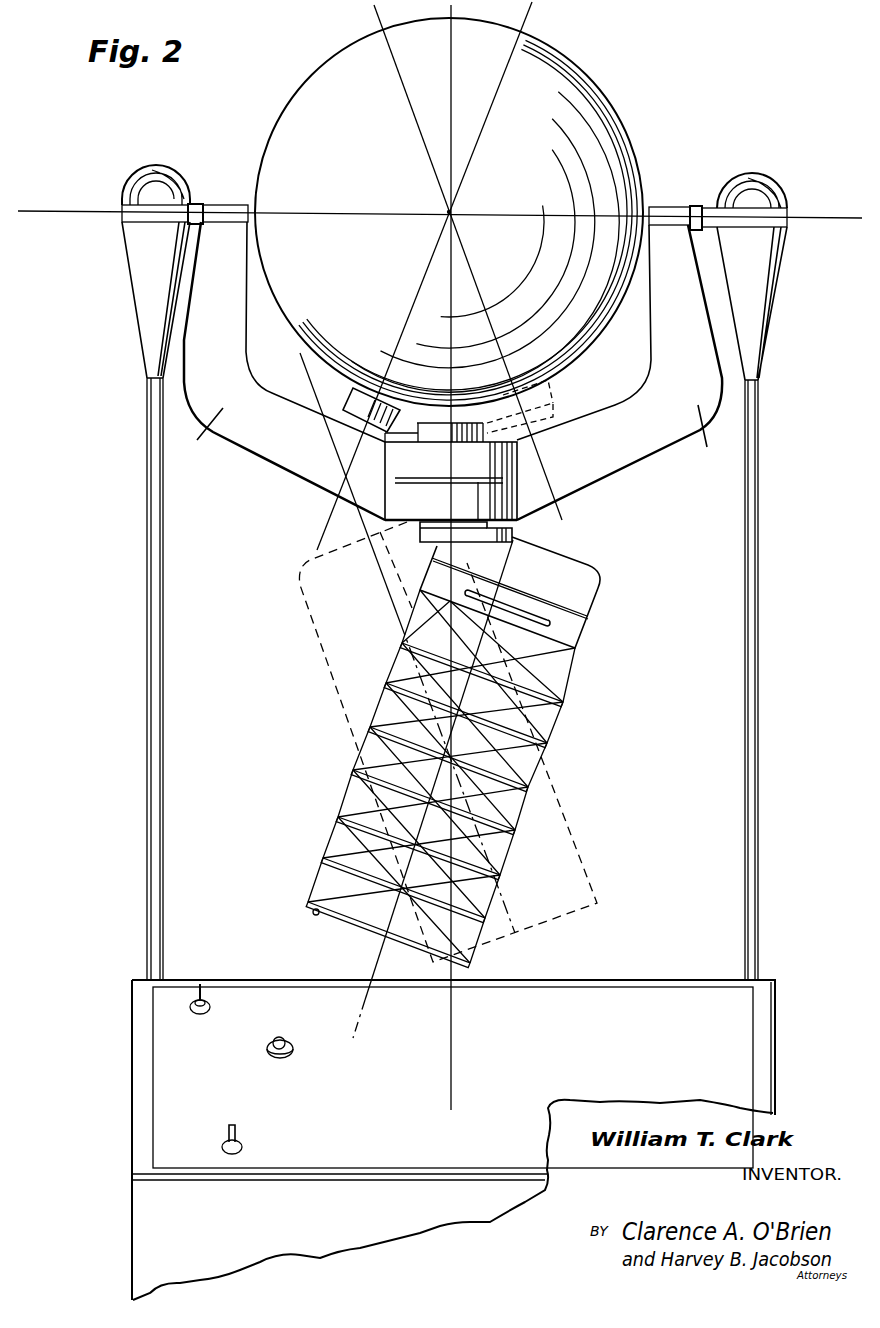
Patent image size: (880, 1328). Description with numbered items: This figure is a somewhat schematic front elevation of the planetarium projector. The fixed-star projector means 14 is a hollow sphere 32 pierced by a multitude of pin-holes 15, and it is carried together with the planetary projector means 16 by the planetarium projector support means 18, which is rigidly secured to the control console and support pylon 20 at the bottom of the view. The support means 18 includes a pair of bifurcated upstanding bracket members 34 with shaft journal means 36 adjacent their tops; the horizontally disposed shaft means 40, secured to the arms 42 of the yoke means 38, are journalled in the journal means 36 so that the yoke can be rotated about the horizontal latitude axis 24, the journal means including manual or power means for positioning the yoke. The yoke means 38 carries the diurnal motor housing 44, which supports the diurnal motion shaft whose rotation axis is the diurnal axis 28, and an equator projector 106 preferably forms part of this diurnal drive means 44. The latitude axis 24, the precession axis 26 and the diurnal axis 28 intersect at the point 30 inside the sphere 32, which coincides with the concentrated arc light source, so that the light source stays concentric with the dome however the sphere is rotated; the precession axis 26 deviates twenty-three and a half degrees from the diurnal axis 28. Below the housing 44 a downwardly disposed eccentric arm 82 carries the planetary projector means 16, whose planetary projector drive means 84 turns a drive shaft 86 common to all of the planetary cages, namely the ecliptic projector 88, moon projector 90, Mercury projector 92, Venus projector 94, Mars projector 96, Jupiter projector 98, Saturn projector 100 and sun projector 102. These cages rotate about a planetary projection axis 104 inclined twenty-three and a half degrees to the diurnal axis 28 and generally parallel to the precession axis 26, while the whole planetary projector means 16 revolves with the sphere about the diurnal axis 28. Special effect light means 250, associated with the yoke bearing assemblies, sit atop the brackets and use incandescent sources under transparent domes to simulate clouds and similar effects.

The fixed-star projector means 14 is at (623, 88).
The pin-holes 15 is at (344, 140).
The planetary projector means 16 is at (482, 779).
The planetarium projector support means 18 is at (518, 365).
The control console and support pylon 20 is at (779, 1045).
The latitude axis 24 is at (60, 206).
The precession axis 26 is at (531, 24).
The diurnal axis 28 is at (456, 8).
The intersection point of axes 30 is at (463, 204).
The hollow sphere 32 is at (622, 148).
The bifurcated upstanding bracket members 34 is at (145, 505).
The shaft journal means 36 is at (119, 240).
The yoke means 38 is at (634, 470).
The horizontally disposed shaft means 40 is at (200, 202).
The arms of the yoke means 42 is at (452, 371).
The diurnal motor housing 44 is at (500, 504).
The eccentric arm 82 is at (514, 533).
The planetary projector drive means 84 is at (592, 598).
The drive shaft 86 is at (413, 603).
The ecliptic projector 88 is at (571, 634).
The moon projector 90 is at (567, 683).
The Mercury projector 92 is at (561, 717).
The Venus projector 94 is at (529, 770).
The Mars projector 96 is at (523, 808).
The Jupiter projector 98 is at (509, 845).
The Saturn projector 100 is at (493, 892).
The sun projector 102 is at (481, 933).
The planetary projection axis 104 is at (366, 962).
The equator projector 106 is at (494, 466).
The special effect light means 250 is at (167, 165).